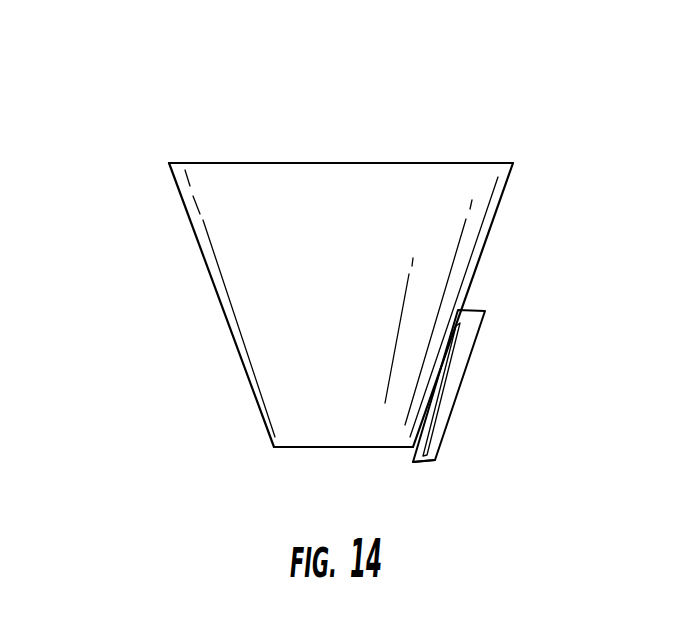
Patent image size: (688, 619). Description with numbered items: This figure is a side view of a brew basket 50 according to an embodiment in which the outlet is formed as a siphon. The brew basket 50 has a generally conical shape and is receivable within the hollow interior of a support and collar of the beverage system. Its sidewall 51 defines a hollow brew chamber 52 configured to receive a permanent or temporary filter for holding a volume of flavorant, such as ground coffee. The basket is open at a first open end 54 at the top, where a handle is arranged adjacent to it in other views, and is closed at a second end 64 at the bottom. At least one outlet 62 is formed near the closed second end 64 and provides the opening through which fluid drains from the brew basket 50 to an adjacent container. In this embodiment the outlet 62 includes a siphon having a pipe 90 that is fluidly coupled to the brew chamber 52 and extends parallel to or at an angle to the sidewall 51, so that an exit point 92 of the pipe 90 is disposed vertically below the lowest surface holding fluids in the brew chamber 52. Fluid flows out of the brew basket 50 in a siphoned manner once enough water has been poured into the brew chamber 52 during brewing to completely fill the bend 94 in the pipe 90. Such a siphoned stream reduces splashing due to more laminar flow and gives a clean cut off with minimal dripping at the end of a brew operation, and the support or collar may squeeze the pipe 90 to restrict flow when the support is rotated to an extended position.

The brew basket 50 is at (495, 118).
The sidewall 51 is at (237, 298).
The brew chamber 52 is at (345, 218).
The first open end 54 is at (187, 163).
The outlet 62 is at (460, 305).
The second end 64 is at (295, 448).
The pipe 90 is at (453, 378).
The exit point 92 is at (425, 455).
The bend 94 is at (472, 318).